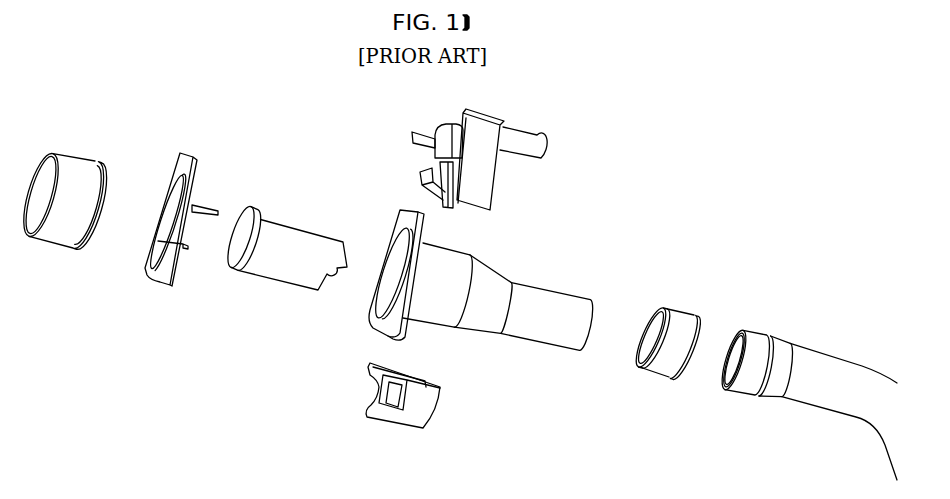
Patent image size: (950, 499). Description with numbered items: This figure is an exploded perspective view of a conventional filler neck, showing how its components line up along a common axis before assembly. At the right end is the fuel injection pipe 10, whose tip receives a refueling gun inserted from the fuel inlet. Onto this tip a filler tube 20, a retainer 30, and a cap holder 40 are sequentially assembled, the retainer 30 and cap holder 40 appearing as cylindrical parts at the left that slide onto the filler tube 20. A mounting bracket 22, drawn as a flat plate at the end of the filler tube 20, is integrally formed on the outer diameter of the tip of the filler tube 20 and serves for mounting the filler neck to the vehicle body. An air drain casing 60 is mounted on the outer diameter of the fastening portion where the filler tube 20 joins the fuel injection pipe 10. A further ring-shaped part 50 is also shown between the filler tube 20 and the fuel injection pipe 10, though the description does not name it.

The hose 10 is at (805, 357).
The connector body 20 is at (508, 262).
The flange 22 is at (408, 210).
The inner cylinder / spool 30 is at (285, 277).
The ring 40 is at (57, 232).
The ring / clamp 50 is at (678, 318).
The bracket / locking member 60 is at (488, 172).